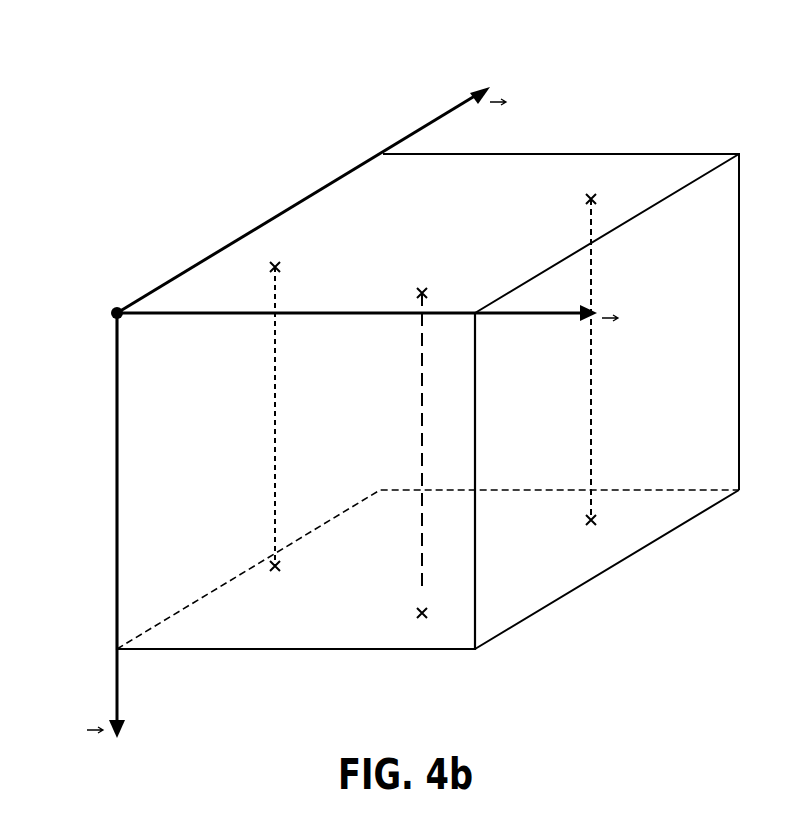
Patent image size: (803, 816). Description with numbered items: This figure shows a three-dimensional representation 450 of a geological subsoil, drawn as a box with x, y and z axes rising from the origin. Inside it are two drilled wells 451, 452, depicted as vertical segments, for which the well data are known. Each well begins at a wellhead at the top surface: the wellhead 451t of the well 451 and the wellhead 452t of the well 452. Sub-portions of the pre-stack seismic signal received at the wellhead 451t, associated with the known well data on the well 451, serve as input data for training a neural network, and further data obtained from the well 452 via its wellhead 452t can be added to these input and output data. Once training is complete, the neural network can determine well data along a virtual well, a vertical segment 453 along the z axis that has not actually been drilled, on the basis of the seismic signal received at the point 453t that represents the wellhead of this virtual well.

The three-dimensional representation 450 is at (688, 123).
The well 451 is at (275, 295).
The wellhead 451t is at (284, 264).
The well 452 is at (591, 442).
The wellhead 452t is at (594, 195).
The segment 453 is at (422, 588).
The point 453t is at (425, 290).